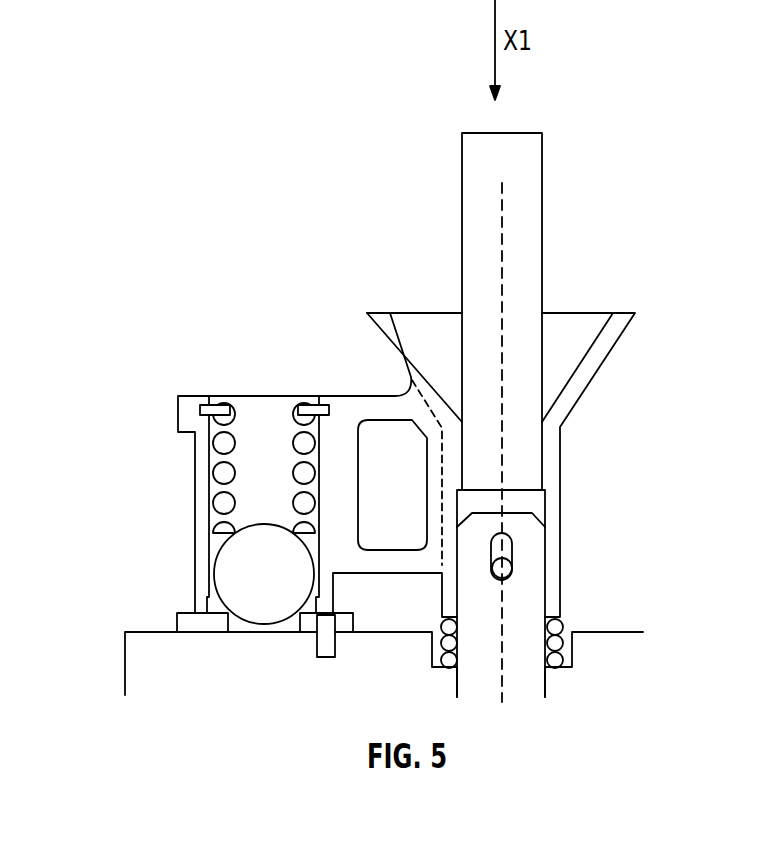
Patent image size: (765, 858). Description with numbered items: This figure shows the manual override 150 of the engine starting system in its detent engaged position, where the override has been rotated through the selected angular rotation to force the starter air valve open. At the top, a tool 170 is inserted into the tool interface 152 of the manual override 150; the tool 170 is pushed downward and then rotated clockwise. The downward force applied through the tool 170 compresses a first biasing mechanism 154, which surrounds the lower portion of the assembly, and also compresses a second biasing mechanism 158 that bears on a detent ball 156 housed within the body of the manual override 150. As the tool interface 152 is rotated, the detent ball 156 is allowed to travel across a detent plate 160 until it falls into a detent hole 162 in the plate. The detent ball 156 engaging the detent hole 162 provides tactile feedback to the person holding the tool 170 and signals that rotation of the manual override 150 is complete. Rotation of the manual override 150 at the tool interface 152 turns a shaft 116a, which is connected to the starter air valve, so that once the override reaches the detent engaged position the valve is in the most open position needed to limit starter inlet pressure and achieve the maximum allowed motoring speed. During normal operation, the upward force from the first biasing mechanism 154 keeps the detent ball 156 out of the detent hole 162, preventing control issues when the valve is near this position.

The manual override 150 is at (216, 224).
The tool interface 152 is at (543, 455).
The first biasing mechanism 154 is at (553, 643).
The detent ball 156 is at (255, 563).
The second biasing mechanism 158 is at (225, 478).
The detent plate 160 is at (202, 622).
The detent hole 162 is at (260, 642).
The tool 170 is at (522, 165).
The shaft 116a is at (546, 682).